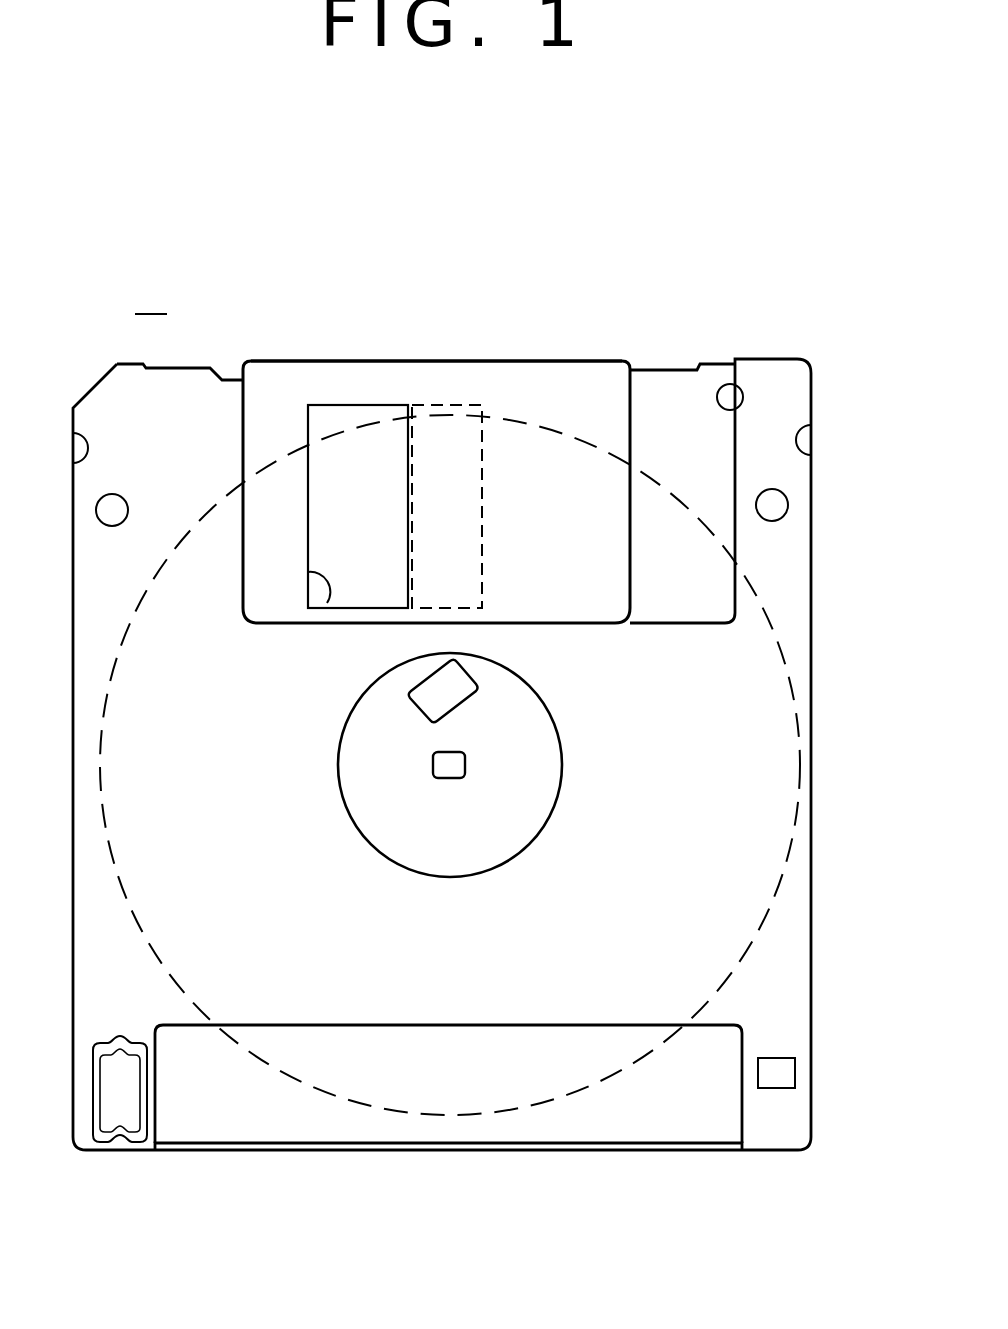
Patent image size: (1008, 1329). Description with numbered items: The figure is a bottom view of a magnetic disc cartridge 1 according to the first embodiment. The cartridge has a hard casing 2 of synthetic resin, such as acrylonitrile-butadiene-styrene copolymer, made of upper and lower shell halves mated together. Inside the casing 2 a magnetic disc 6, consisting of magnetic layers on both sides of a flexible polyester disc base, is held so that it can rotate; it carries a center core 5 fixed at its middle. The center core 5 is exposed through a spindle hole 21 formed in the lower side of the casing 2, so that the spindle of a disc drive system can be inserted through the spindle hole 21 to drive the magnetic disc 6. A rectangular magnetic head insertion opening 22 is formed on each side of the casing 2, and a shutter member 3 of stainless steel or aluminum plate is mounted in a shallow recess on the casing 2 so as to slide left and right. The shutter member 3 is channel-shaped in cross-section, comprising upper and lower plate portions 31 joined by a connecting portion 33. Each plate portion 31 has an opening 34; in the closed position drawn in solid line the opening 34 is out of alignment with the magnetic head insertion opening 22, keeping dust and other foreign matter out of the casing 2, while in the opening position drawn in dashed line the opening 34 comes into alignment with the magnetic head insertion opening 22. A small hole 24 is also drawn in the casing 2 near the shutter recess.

The magnetic disc cartridge 1 is at (151, 297).
The casing 2 is at (815, 753).
The shutter member 3 is at (590, 356).
The center core 5 is at (523, 733).
The magnetic disc 6 is at (783, 886).
The spindle hole 21 is at (557, 768).
The magnetic head insertion opening 22 is at (483, 543).
The positioning hole 24 is at (742, 407).
The plate portion 31 is at (512, 393).
The connecting portion 33 is at (338, 361).
The opening 34 is at (327, 603).